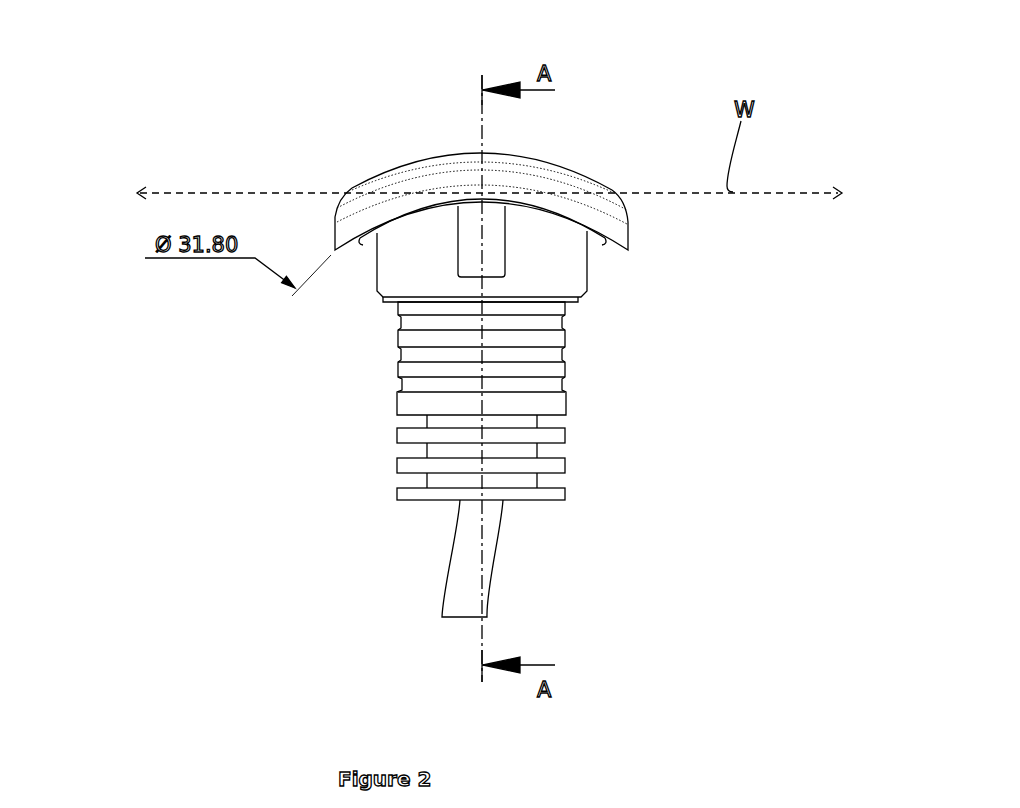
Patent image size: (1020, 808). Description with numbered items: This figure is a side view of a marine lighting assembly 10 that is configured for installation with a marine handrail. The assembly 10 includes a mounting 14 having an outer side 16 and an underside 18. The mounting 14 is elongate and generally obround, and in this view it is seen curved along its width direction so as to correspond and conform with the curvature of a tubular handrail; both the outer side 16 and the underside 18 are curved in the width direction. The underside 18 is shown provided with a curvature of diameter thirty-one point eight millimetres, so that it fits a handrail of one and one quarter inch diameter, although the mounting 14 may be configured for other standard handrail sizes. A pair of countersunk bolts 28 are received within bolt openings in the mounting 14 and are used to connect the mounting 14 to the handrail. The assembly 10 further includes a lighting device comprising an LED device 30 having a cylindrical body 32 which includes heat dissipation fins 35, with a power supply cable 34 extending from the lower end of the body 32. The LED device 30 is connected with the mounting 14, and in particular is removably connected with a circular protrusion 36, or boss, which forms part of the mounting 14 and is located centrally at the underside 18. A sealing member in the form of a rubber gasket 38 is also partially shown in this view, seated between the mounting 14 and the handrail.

The marine lighting assembly 10 is at (187, 122).
The mounting 14 is at (650, 237).
The outer side 16 is at (565, 158).
The underside 18 is at (547, 225).
The countersunk bolts 28 is at (493, 255).
The LED device 30 is at (347, 432).
The cylindrical body 32 is at (547, 400).
The power supply cable 34 is at (460, 573).
The heat dissipation fins 35 is at (560, 497).
The circular protrusion 36 is at (385, 253).
The rubber gasket 38 is at (403, 215).